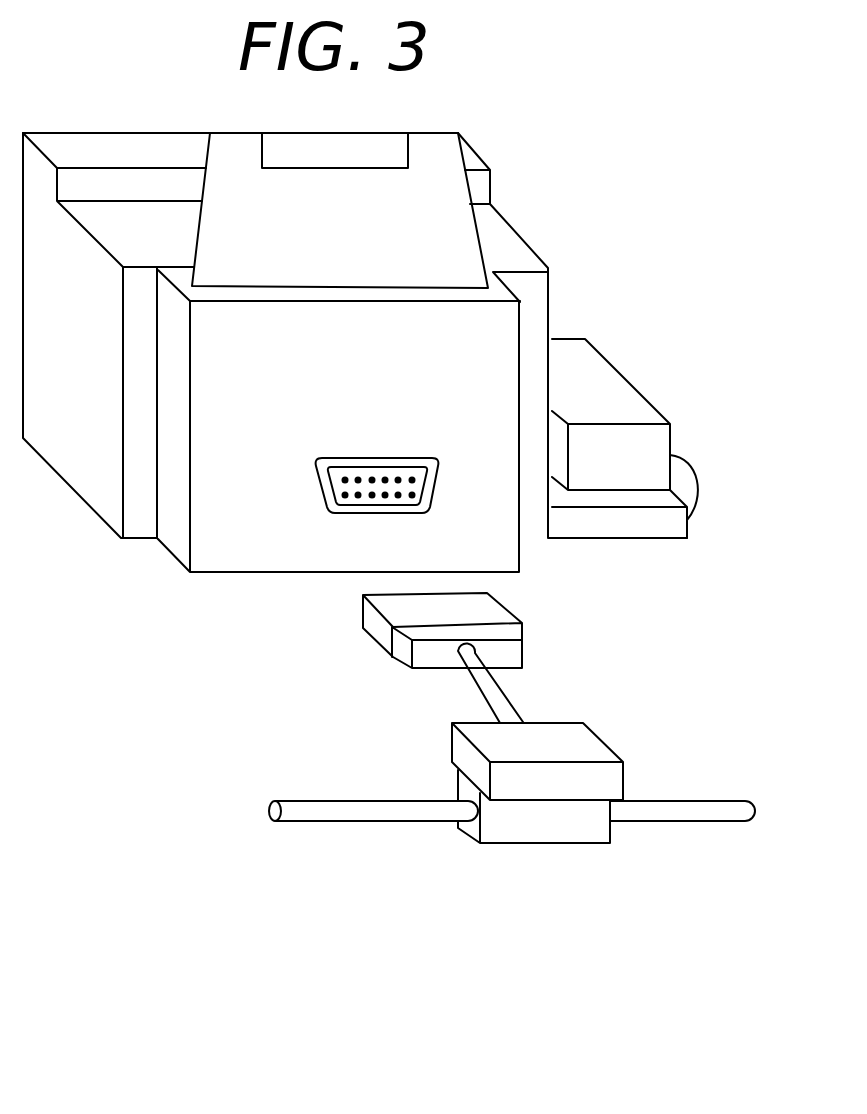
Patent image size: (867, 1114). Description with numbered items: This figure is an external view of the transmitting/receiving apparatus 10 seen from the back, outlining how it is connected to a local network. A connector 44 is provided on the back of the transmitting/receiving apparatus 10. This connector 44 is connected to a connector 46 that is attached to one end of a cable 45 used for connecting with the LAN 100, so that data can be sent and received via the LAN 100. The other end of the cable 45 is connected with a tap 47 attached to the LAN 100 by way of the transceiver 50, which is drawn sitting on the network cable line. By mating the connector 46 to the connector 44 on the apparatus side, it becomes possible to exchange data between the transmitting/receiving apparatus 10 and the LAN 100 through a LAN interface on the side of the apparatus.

The transmitting/receiving apparatus 10 is at (478, 155).
The connector 44 is at (422, 458).
The connector 46 is at (505, 608).
The cable 45 is at (510, 695).
The transceiver 50 is at (597, 733).
The tap 47 is at (597, 846).
The LAN LAN100 is at (338, 800).